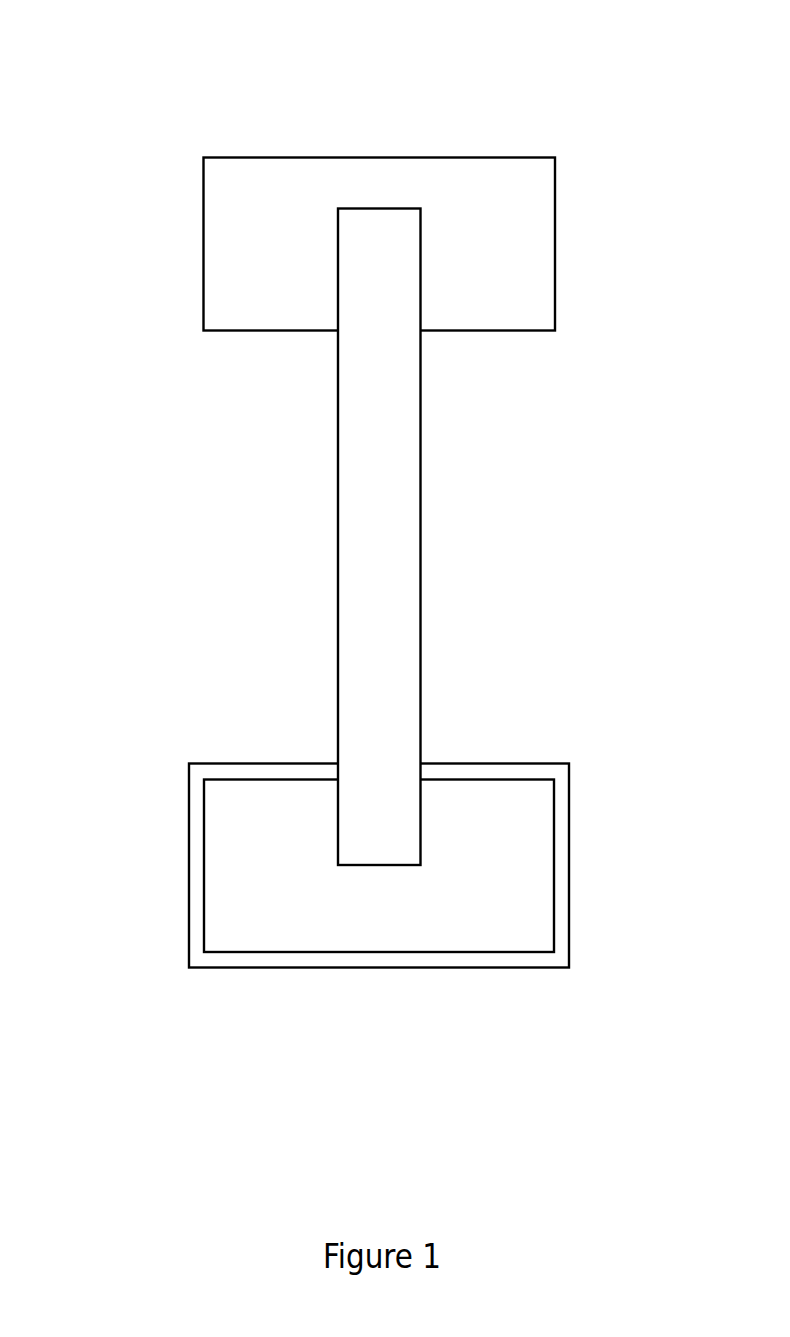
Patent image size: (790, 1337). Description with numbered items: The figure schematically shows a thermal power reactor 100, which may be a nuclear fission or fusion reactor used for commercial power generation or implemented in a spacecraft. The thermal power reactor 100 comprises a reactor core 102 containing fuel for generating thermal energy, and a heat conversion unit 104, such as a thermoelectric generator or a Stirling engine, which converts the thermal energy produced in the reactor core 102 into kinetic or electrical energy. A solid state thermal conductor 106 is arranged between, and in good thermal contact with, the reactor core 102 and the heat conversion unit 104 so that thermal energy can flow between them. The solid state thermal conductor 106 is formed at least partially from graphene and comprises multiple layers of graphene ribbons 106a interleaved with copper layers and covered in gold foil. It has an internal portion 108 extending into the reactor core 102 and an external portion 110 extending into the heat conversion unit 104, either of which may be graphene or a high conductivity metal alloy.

The thermal power reactor 100 is at (150, 87).
The reactor core 102 is at (482, 176).
The heat conversion unit 104 is at (482, 922).
The solid state thermal conductor 106 is at (372, 497).
The layers of graphene ribbons 106a is at (250, 957).
The internal portion 108 is at (384, 252).
The external portion 110 is at (374, 827).